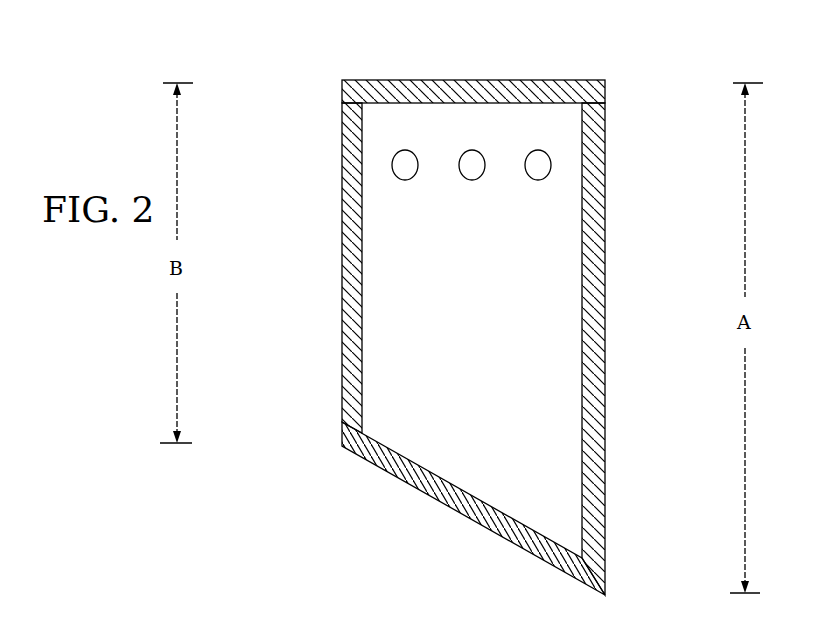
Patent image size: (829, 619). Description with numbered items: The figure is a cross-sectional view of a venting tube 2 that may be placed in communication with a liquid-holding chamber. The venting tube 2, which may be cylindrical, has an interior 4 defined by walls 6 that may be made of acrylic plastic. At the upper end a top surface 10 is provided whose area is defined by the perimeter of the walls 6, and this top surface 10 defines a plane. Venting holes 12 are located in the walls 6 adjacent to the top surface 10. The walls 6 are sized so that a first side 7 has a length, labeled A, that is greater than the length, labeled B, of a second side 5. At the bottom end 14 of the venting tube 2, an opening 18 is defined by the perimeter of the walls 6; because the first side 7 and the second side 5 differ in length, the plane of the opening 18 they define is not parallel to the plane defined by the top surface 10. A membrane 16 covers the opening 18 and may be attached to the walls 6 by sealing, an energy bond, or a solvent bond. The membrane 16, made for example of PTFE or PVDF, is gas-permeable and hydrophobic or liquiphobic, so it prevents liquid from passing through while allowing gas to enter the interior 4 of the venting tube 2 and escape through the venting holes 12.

The venting tube 2 is at (460, 343).
The interior 4 is at (545, 362).
The second side 5 is at (336, 407).
The walls 6 is at (342, 177).
The first side 7 is at (612, 197).
The top surface 10 is at (548, 80).
The venting holes 12 is at (404, 180).
The bottom end 14 is at (506, 556).
The membrane 16 is at (455, 497).
The opening 18 is at (572, 548).